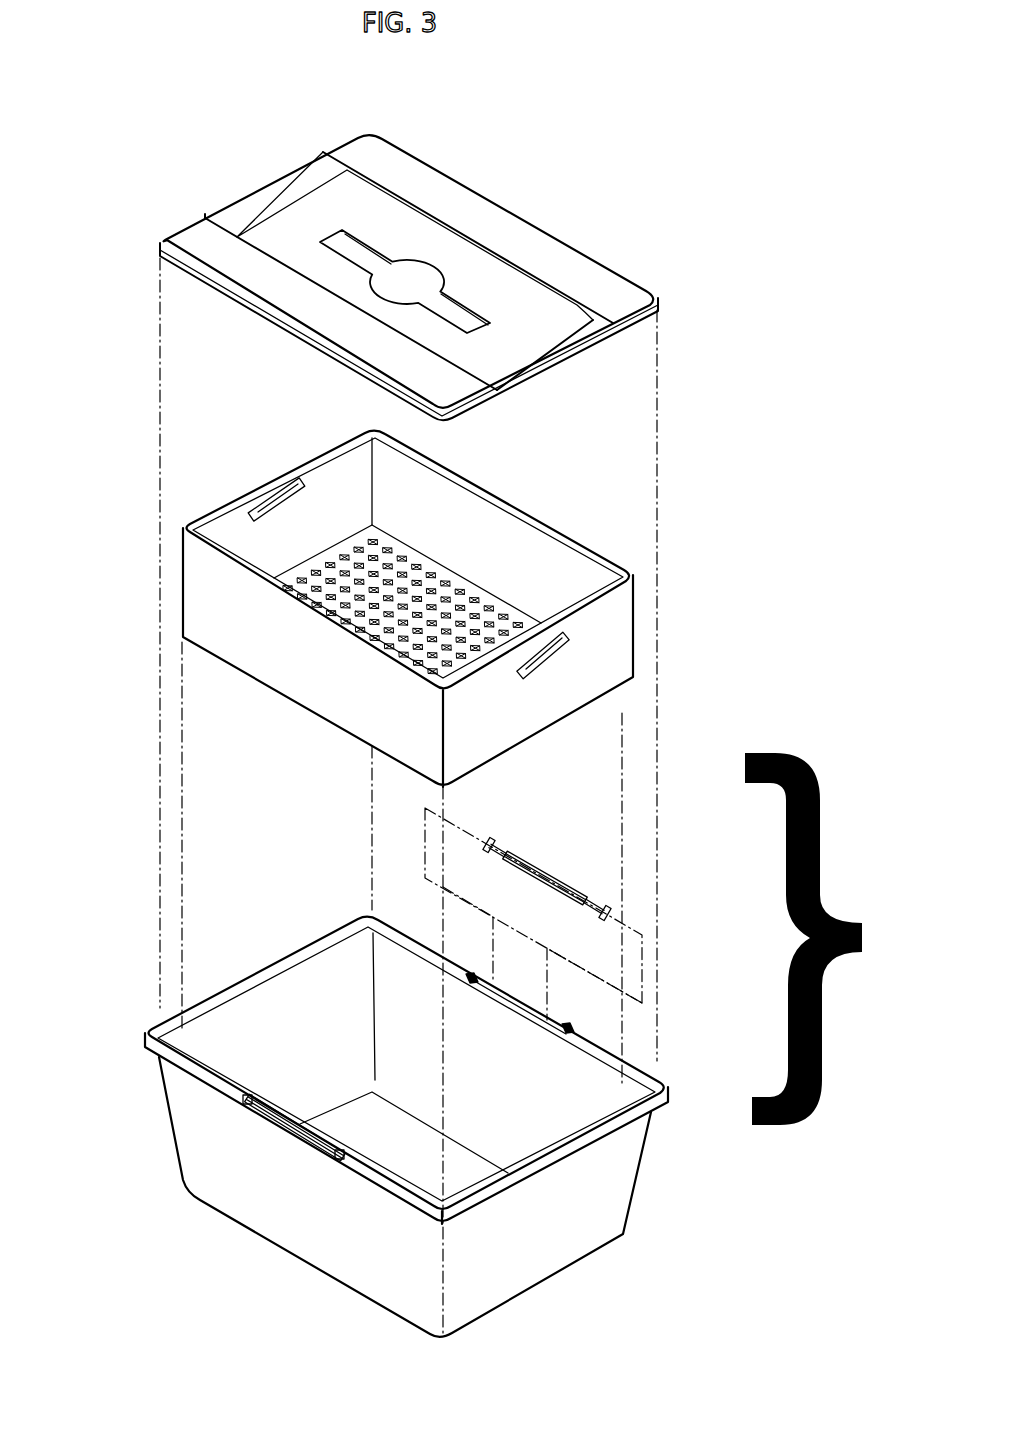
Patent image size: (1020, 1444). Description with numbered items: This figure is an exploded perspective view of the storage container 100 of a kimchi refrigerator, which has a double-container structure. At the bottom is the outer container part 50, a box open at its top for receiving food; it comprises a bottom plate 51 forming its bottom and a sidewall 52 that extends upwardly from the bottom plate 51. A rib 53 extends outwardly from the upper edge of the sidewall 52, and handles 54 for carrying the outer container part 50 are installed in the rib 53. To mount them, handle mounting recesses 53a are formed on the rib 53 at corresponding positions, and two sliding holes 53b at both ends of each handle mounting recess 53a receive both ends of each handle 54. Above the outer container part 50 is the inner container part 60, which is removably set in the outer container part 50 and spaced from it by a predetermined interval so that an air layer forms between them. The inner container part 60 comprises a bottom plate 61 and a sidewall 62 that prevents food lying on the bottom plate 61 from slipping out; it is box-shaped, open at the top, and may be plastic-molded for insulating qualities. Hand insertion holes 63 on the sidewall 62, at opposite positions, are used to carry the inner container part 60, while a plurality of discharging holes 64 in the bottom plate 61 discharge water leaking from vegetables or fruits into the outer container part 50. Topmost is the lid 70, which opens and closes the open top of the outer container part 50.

The storage container 100 is at (829, 939).
The outer container part 50 is at (158, 1126).
The bottom plate 51 is at (478, 1173).
The sidewall 52 is at (290, 993).
The rib 53 is at (248, 981).
The handle mounting recess 53a is at (507, 995).
The sliding hole 53b is at (478, 977).
The handle 54 is at (550, 861).
The inner container part 60 is at (640, 626).
The bottom plate 61 is at (417, 567).
The sidewall 62 is at (398, 473).
The hand insertion hole 63 is at (286, 492).
The discharging hole 64 is at (507, 622).
The lid 70 is at (196, 233).